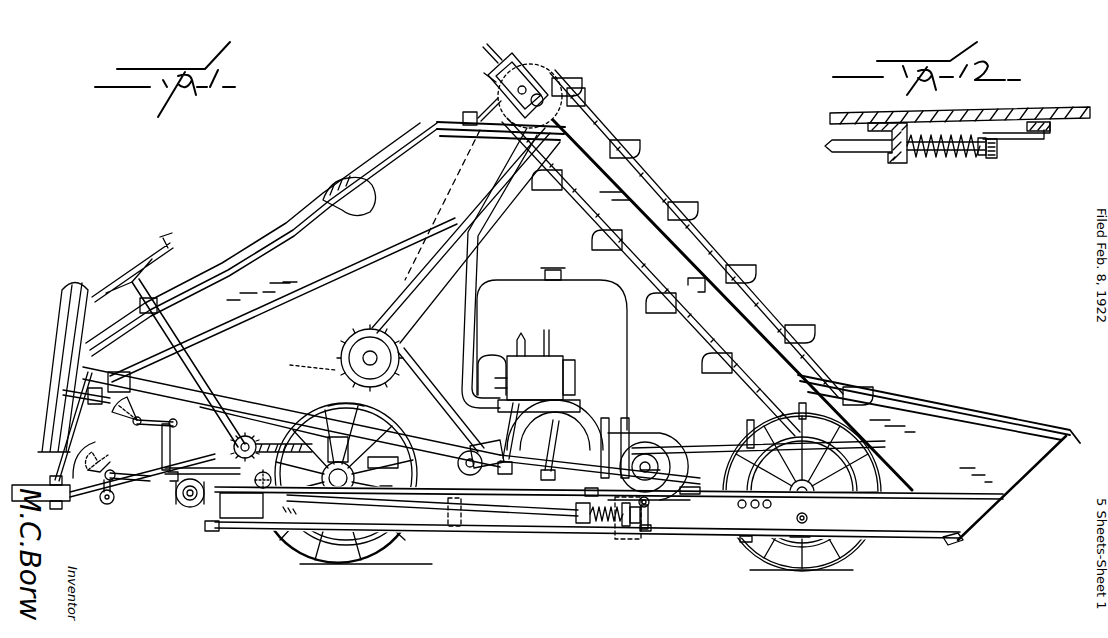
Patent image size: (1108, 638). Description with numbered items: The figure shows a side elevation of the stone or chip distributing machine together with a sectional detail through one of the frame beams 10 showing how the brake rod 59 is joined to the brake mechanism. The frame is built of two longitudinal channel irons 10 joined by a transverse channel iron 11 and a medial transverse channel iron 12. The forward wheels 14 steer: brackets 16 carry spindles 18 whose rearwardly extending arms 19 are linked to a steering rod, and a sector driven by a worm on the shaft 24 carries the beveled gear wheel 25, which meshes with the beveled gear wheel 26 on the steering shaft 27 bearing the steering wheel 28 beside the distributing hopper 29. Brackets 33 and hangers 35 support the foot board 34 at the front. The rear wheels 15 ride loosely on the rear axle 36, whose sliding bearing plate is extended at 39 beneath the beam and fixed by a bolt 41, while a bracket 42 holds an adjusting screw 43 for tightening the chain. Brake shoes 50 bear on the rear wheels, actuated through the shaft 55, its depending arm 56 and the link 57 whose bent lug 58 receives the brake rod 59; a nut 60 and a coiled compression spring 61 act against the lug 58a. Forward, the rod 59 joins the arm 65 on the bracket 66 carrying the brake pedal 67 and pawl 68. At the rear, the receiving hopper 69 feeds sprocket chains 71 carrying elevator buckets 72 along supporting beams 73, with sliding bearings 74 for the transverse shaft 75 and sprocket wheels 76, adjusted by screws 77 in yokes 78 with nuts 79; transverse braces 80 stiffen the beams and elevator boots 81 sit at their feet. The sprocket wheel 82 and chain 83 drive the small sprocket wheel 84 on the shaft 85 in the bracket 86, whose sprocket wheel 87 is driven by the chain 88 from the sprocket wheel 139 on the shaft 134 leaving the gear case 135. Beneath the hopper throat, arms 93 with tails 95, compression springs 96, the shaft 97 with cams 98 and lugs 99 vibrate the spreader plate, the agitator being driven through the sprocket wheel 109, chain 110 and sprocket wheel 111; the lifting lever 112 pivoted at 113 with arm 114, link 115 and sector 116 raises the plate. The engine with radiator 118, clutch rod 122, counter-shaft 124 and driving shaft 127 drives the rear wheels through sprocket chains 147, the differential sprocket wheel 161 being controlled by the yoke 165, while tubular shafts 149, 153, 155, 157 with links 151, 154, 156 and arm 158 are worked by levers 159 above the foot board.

In FIG. 1, the channel iron 10 is at (932, 540).
In FIG. 12, the channel iron 10 is at (1068, 108).
In FIG. 1, the transverse channel iron 11 is at (217, 532).
In FIG. 1, the medial transverse channel iron 12 is at (578, 509).
In FIG. 1, the forward wheels 14 is at (300, 562).
In FIG. 1, the rear wheels 15 is at (866, 542).
In FIG. 1, the brackets 16 is at (320, 488).
In FIG. 1, the spindles 18 is at (350, 477).
In FIG. 1, the rearwardly extending arms 19 is at (386, 476).
In FIG. 1, the shaft 24 is at (275, 443).
In FIG. 1, the beveled gear wheel 25 is at (236, 506).
In FIG. 1, the beveled gear wheel 26 is at (233, 446).
In FIG. 1, the steering shaft 27 is at (192, 368).
In FIG. 1, the steering wheel 28 is at (140, 262).
In FIG. 1, the distributing hopper 29 is at (283, 230).
In FIG. 1, the brackets 33 is at (68, 500).
In FIG. 1, the foot board 34 is at (30, 486).
In FIG. 1, the vertical braces or hangers 35 is at (63, 452).
In FIG. 1, the rear axle 36 is at (810, 498).
In FIG. 1, the angular extension 39 is at (803, 524).
In FIG. 1, the bolt 41 is at (797, 541).
In FIG. 1, the bracket 42 is at (766, 508).
In FIG. 1, the adjusting screw 43 is at (741, 508).
In FIG. 1, the brake shoes 50 is at (744, 542).
In FIG. 1, the shaft 55 is at (650, 503).
In FIG. 1, the downwardly depending arm 56 is at (652, 526).
In FIG. 12, the downwardly depending arm 56 is at (1055, 131).
In FIG. 1, the link 57 is at (646, 531).
In FIG. 12, the link 57 is at (1020, 141).
In FIG. 1, the lug 58 is at (625, 528).
In FIG. 12, the lug 58 is at (980, 158).
In FIG. 12, the lug 58a is at (895, 162).
In FIG. 1, the brake rod 59 is at (520, 520).
In FIG. 12, the brake rod 59 is at (850, 152).
In FIG. 1, the nut 60 is at (634, 530).
In FIG. 12, the nut 60 is at (992, 162).
In FIG. 1, the coiled compression spring 61 is at (600, 527).
In FIG. 12, the coiled compression spring 61 is at (920, 158).
In FIG. 1, the upwardly projecting arm 65 is at (120, 482).
In FIG. 1, the supporting bracket 66 is at (106, 505).
In FIG. 1, the brake pedal 67 is at (85, 462).
In FIG. 1, the pawl 68 is at (100, 460).
In FIG. 1, the receiving hopper 69 is at (955, 415).
In FIG. 1, the sprocket chains 71 is at (650, 267).
In FIG. 1, the elevator buckets 72 is at (700, 213).
In FIG. 1, the supporting beams 73 is at (625, 195).
In FIG. 1, the sliding bearings 74 is at (540, 75).
In FIG. 1, the transverse shaft 75 is at (585, 84).
In FIG. 1, the sprocket wheels 76 is at (588, 100).
In FIG. 1, the adjusting screws 77 is at (486, 44).
In FIG. 1, the yokes 78 is at (510, 55).
In FIG. 1, the nuts 79 is at (484, 74).
In FIG. 1, the transverse braces 80 is at (700, 292).
In FIG. 1, the elevator boots 81 is at (867, 456).
In FIG. 1, the sprocket wheel 82 is at (469, 112).
In FIG. 1, the sprocket chain 83 is at (500, 206).
In FIG. 1, the sprocket wheel 84 is at (428, 292).
In FIG. 1, the shaft 85 is at (350, 345).
In FIG. 1, the bracket 86 is at (378, 328).
In FIG. 1, the sprocket wheel 87 is at (476, 368).
In FIG. 1, the sprocket chain 88 is at (452, 410).
In FIG. 1, the arms 93 is at (172, 482).
In FIG. 1, the tails 95 is at (270, 476).
In FIG. 1, the compression springs 96 is at (279, 507).
In FIG. 1, the shaft 97 is at (190, 507).
In FIG. 1, the cams 98 is at (180, 502).
In FIG. 1, the lugs 99 is at (195, 468).
In FIG. 1, the sprocket wheel 109 is at (187, 508).
In FIG. 1, the sprocket chain 110 is at (340, 405).
In FIG. 1, the sprocket wheel 111 is at (290, 365).
In FIG. 1, the lifting lever 112 is at (85, 398).
In FIG. 1, the pivot 113 is at (134, 425).
In FIG. 1, the rearwardly extending arm 114 is at (150, 418).
In FIG. 1, the link 115 is at (172, 432).
In FIG. 1, the sector 116 is at (130, 385).
In FIG. 1, the radiator 118 is at (513, 290).
In FIG. 1, the actuating rod 122 is at (510, 410).
In FIG. 1, the counter-shaft 124 is at (504, 474).
In FIG. 1, the driving shaft 127 is at (647, 462).
In FIG. 1, the shaft 134 is at (461, 526).
In FIG. 1, the gear case 135 is at (688, 495).
In FIG. 1, the sprocket wheel 139 is at (458, 473).
In FIG. 1, the sprocket chains 147 is at (711, 447).
In FIG. 1, the tubular shaft 149 is at (592, 496).
In FIG. 1, the link 151 is at (629, 420).
In FIG. 1, the tubular shaft 153 is at (590, 478).
In FIG. 1, the link 154 is at (605, 418).
In FIG. 1, the tubular shaft 155 is at (532, 458).
In FIG. 1, the link 156 is at (560, 427).
In FIG. 1, the tubular shaft 157 is at (240, 400).
In FIG. 1, the arm 158 is at (492, 443).
In FIG. 1, the levers 159 is at (80, 282).
In FIG. 1, the sprocket wheel 161 is at (690, 457).
In FIG. 1, the yoke 165 is at (690, 482).